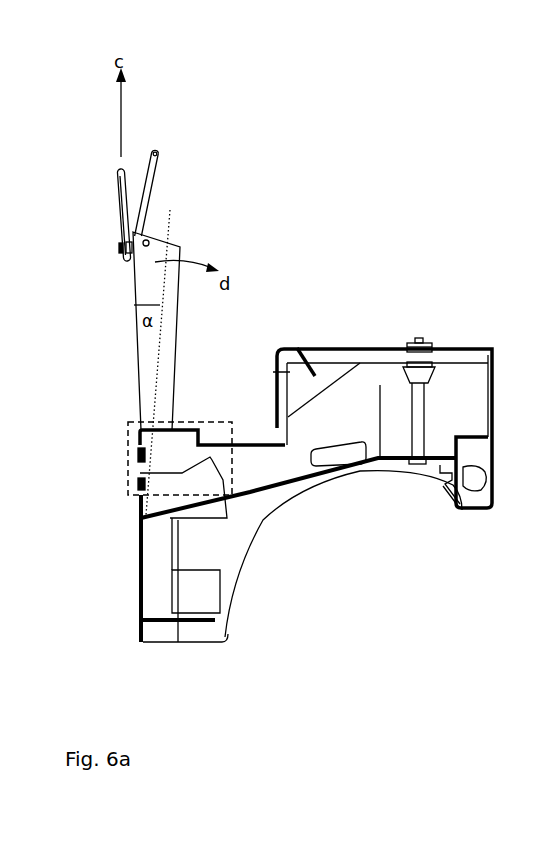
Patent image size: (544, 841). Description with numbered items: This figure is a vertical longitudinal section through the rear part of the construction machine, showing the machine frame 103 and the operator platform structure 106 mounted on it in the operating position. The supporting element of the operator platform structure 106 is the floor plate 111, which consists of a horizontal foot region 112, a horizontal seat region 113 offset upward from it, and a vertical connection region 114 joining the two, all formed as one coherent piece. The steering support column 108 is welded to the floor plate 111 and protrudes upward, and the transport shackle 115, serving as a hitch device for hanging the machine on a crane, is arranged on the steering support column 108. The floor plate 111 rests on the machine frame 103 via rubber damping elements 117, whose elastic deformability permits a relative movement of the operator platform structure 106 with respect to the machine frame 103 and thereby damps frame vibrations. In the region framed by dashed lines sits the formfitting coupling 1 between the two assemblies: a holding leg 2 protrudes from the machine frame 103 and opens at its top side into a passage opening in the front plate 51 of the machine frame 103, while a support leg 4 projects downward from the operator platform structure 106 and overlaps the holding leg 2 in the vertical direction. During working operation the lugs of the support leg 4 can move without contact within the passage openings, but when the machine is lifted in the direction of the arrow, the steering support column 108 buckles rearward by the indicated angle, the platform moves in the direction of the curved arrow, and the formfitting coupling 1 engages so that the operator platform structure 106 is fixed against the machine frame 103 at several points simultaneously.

The formfitting coupling 1 is at (113, 460).
The holding leg 2 is at (141, 517).
The support leg 4 is at (165, 457).
The front plate 51 is at (145, 628).
The machine frame 103 is at (418, 463).
The operator platform structure 106 is at (352, 349).
The steering support column 108 is at (148, 282).
The floor plate 111 is at (237, 423).
The foot region 112 is at (259, 420).
The seat region 113 is at (393, 347).
The connection region 114 is at (290, 373).
The transport shackle 115 is at (118, 192).
The damping element 117 is at (430, 340).